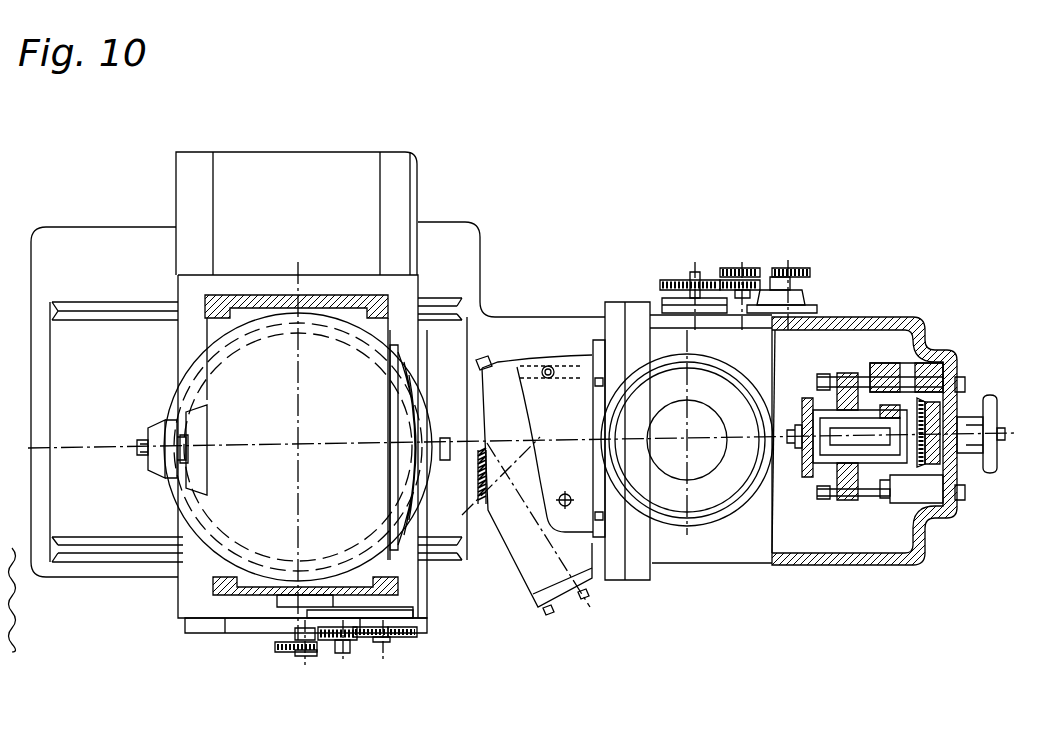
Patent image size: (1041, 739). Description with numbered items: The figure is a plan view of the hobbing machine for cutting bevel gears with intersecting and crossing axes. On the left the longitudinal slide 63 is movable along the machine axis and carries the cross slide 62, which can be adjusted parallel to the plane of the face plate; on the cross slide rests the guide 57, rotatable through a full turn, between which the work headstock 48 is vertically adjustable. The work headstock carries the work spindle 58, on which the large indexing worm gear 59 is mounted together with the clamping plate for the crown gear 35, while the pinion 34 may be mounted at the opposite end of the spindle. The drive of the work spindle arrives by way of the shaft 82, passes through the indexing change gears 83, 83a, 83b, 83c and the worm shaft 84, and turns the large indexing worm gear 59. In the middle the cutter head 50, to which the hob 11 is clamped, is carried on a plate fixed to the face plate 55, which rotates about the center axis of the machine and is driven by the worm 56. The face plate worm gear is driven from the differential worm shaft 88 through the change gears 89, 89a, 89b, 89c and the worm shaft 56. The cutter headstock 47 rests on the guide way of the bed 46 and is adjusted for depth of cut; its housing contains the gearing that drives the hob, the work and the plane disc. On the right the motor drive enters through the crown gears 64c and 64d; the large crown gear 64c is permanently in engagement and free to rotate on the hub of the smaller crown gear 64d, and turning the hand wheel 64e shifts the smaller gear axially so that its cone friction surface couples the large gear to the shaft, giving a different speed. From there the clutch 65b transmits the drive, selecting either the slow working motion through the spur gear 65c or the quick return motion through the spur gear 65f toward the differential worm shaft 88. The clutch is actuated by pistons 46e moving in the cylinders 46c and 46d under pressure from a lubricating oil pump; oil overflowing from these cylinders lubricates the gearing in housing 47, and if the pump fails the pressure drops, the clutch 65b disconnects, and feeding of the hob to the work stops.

The hob 11 is at (478, 503).
The pinion 34 is at (160, 472).
The crown gear 35 is at (422, 376).
The bed 46 is at (482, 243).
The cylinder 46c is at (903, 365).
The cylinder 46d is at (905, 504).
The piston 46e is at (946, 353).
The cutter headstock 47 is at (868, 566).
The work headstock 48 is at (212, 335).
The cutter head 50 is at (506, 378).
The face plate 55 is at (620, 574).
The worm 56 is at (683, 293).
The guide 57 is at (226, 296).
The work spindle 58 is at (183, 448).
The large indexing worm gear 59 is at (403, 398).
The cross slide 62 is at (414, 286).
The longitudinal slide 63 is at (362, 158).
The crown gear 64c is at (940, 402).
The crown gear 64d is at (950, 465).
The hand wheel 64e is at (992, 402).
The clutch 65b is at (845, 375).
The spur gear 65c is at (888, 408).
The spur gear 65f is at (810, 398).
The shaft 82 is at (296, 638).
The indexing change gear 83 is at (285, 652).
The indexing change gear 83a is at (330, 641).
The indexing change gear 83b is at (370, 640).
The indexing change gear 83c is at (402, 640).
The worm shaft 84 is at (400, 626).
The differential worm shaft 88 is at (800, 289).
The change gear 89 is at (792, 268).
The change gear 89a is at (748, 268).
The change gear 89b is at (730, 278).
The change gear 89c is at (672, 280).